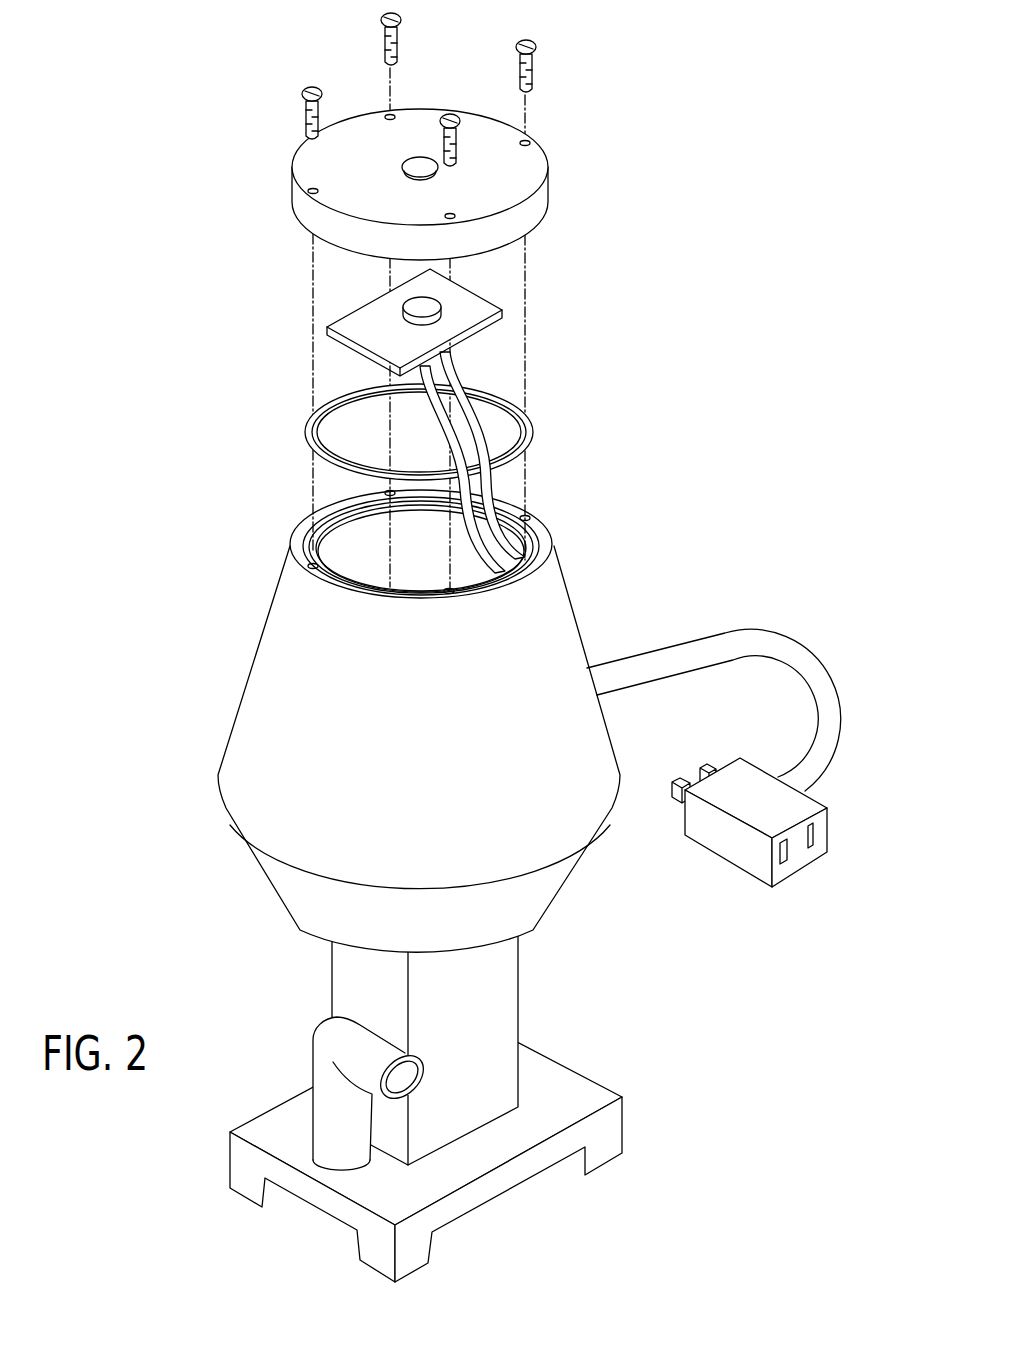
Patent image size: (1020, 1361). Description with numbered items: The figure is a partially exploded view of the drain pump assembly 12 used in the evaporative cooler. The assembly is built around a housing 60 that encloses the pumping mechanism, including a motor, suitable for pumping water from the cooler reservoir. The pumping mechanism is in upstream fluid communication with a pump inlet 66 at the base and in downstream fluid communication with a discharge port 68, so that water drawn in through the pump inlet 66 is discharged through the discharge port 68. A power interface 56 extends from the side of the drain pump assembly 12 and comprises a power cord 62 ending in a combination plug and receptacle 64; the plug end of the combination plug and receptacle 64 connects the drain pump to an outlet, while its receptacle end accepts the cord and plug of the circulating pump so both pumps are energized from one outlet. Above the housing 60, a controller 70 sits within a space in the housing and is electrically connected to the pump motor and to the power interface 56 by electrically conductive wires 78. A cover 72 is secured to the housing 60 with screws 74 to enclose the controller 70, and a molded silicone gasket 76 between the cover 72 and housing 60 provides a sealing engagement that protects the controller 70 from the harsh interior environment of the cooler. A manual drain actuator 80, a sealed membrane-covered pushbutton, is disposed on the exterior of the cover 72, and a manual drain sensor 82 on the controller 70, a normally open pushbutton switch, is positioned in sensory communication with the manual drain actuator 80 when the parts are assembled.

The drain pump assembly 12 is at (688, 205).
The power interface 56 is at (714, 741).
The housing 60 is at (412, 736).
The power cord 62 is at (690, 640).
The combination plug and receptacle 64 is at (727, 850).
The pump inlet 66 is at (318, 1230).
The discharge port 68 is at (316, 1110).
The controller 70 is at (382, 315).
The cover 72 is at (462, 164).
The screws 74 is at (304, 115).
The molded silicone gasket 76 is at (310, 425).
The electrically conductive wires 78 is at (484, 429).
The manual drain actuator 80 is at (400, 163).
The manual drain sensor 82 is at (413, 298).